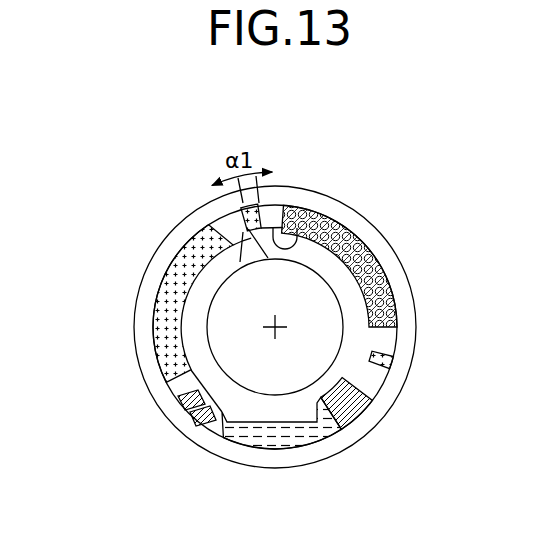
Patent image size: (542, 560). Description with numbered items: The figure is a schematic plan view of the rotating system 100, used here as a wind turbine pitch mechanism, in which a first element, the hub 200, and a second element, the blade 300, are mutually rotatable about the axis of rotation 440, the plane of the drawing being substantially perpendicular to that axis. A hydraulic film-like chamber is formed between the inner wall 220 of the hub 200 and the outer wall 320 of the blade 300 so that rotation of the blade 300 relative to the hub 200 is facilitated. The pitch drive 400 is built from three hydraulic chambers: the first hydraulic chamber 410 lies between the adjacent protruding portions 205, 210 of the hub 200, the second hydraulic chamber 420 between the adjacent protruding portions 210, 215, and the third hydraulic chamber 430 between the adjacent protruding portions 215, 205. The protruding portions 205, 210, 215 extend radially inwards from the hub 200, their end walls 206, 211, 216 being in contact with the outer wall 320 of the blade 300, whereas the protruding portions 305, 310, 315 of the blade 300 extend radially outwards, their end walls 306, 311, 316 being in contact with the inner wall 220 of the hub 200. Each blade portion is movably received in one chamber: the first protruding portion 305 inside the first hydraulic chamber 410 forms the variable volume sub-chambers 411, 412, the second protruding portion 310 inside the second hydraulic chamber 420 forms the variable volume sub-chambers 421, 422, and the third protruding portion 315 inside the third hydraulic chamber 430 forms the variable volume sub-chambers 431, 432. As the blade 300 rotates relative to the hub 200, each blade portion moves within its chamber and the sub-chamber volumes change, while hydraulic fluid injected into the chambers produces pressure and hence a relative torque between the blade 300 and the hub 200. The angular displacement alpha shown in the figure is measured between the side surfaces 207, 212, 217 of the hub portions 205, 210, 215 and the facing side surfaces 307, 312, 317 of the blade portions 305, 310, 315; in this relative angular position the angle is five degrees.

The rotating system 100 is at (120, 162).
The hub 200 is at (300, 195).
The protruding portion of the hub 205 is at (281, 206).
The end wall of the hub protruding portion 206 is at (323, 215).
The side surface of the hub protruding portion 207 is at (269, 263).
The protruding portion of the hub 210 is at (362, 373).
The end wall of the hub protruding portion 211 is at (342, 425).
The side surface of the hub protruding portion 212 is at (372, 358).
The protruding portion of the hub 215 is at (173, 392).
The end wall of the hub protruding portion 216 is at (168, 362).
The side surface of the hub protruding portion 217 is at (190, 407).
The inner wall of the hub 220 is at (188, 245).
The blade 300 is at (320, 253).
The protruding portion of the blade 305 is at (215, 218).
The end wall of the blade protruding portion 306 is at (212, 219).
The side surface of the blade protruding portion 307 is at (162, 287).
The protruding portion of the blade 310 is at (398, 333).
The end wall of the blade protruding portion 311 is at (393, 347).
The side surface of the blade protruding portion 312 is at (390, 357).
The protruding portion of the blade 315 is at (223, 450).
The end wall of the blade protruding portion 316 is at (200, 422).
The side surface of the blade protruding portion 317 is at (190, 410).
The outer wall of the blade 320 is at (243, 422).
The pitch drive 400 is at (363, 402).
The first hydraulic chamber 410 is at (388, 284).
The variable volume sub-chamber 411 is at (375, 257).
The variable volume sub-chamber 412 is at (395, 368).
The second hydraulic chamber 420 is at (285, 446).
The variable volume sub-chamber 421 is at (318, 425).
The variable volume sub-chamber 422 is at (195, 412).
The third hydraulic chamber 430 is at (173, 272).
The variable volume sub-chamber 431 is at (157, 305).
The variable volume sub-chamber 432 is at (273, 210).
The axis of rotation 440 is at (275, 327).